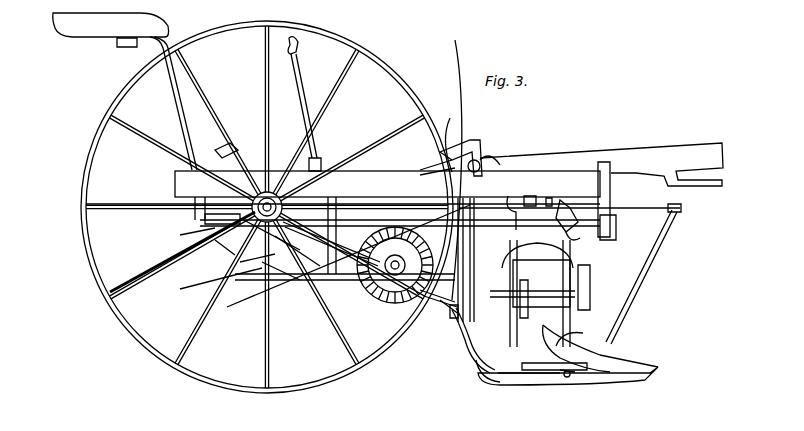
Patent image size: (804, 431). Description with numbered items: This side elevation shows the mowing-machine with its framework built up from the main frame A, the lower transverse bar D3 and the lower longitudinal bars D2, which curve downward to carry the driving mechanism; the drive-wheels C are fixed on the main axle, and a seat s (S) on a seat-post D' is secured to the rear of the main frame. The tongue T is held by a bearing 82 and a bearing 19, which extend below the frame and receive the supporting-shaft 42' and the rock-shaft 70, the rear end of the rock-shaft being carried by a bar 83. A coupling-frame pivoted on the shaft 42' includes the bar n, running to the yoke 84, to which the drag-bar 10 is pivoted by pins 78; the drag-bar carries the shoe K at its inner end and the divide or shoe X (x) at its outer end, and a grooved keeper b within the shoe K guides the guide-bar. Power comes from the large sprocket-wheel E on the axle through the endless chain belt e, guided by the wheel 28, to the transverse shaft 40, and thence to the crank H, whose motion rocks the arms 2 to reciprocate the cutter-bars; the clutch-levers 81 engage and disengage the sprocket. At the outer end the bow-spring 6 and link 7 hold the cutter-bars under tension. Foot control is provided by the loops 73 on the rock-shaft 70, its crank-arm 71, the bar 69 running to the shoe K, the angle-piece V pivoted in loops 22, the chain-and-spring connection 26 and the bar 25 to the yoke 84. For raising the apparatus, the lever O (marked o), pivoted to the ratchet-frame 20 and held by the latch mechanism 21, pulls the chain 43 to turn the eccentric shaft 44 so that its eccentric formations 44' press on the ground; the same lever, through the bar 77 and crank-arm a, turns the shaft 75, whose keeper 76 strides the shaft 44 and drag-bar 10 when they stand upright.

The drive-wheels C is at (94, 282).
The seat S is at (84, 32).
The seat-post D' is at (167, 103).
The main frame A is at (408, 191).
The latch mechanism 21 is at (299, 58).
The lever o is at (301, 106).
The ratchet-frame 20 is at (323, 158).
The clutch-levers 81 is at (224, 148).
The crank-arm a is at (476, 140).
The bar 77 is at (449, 170).
The bearing 82 is at (488, 163).
The shaft 75 is at (440, 162).
The keeper 76 is at (445, 172).
The tongue T is at (669, 160).
The bearing 19 is at (610, 164).
The angle-piece V is at (507, 203).
The loops 22 is at (549, 198).
The connection 26 is at (566, 200).
The rock-shaft 70 is at (617, 226).
The crank-arm 71 is at (582, 234).
The supporting-shaft 42' is at (590, 208).
The bar n is at (630, 290).
The rocker-arms 2 is at (505, 291).
The crank H is at (537, 293).
The bar 25 is at (522, 291).
The bar 69 is at (591, 290).
The shoe K is at (596, 329).
The shoe x is at (645, 378).
The drag-bar 10 is at (535, 383).
The link 7 is at (556, 380).
The bow-spring 6 is at (568, 378).
The keeper b is at (528, 393).
The eccentric shaft 44 is at (450, 339).
The yoke 84 is at (452, 352).
The pins 78 is at (465, 352).
The eccentric formations 44' is at (477, 378).
The lower transverse bar D3 is at (448, 312).
The chain 43 is at (366, 292).
The transverse shaft 40 is at (384, 304).
The large sprocket-wheel E is at (180, 236).
The loops 73 is at (206, 218).
The lower longitudinal bars D2 is at (232, 252).
The bar 83 is at (212, 284).
The endless chain belt e is at (256, 262).
The lever O is at (290, 277).
The wheel 28 is at (268, 288).